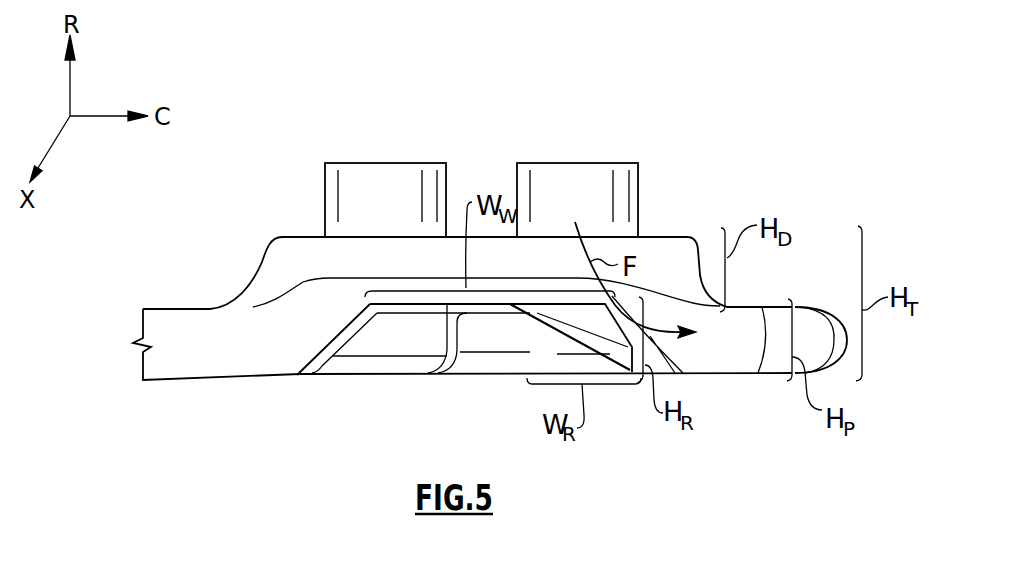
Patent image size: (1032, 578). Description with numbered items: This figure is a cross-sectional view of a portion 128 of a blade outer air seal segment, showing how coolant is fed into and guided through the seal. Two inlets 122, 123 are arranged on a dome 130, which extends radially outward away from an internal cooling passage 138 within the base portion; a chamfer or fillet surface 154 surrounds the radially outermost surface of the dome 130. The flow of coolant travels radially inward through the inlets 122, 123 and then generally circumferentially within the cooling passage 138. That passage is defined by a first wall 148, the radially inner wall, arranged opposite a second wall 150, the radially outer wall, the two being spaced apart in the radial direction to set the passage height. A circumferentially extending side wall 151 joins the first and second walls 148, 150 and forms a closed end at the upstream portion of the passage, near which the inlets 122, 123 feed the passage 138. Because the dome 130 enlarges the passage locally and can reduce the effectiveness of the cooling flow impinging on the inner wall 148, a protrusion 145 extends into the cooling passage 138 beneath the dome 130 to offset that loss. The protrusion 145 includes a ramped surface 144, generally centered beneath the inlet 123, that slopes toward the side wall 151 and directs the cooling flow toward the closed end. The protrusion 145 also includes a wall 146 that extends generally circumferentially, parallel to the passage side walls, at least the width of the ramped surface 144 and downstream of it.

The portion 128 is at (758, 136).
The inlet 123 is at (387, 163).
The inlet 122 is at (585, 163).
The dome 130 is at (305, 234).
The chamfer or fillet surface 154 is at (262, 262).
The internal cooling passage 138 is at (253, 350).
The wall 146 is at (378, 330).
The protrusion 145 is at (472, 358).
The ramped surface 144 is at (557, 330).
The first wall 148 is at (733, 374).
The second wall 150 is at (758, 373).
The side wall 151 is at (845, 343).